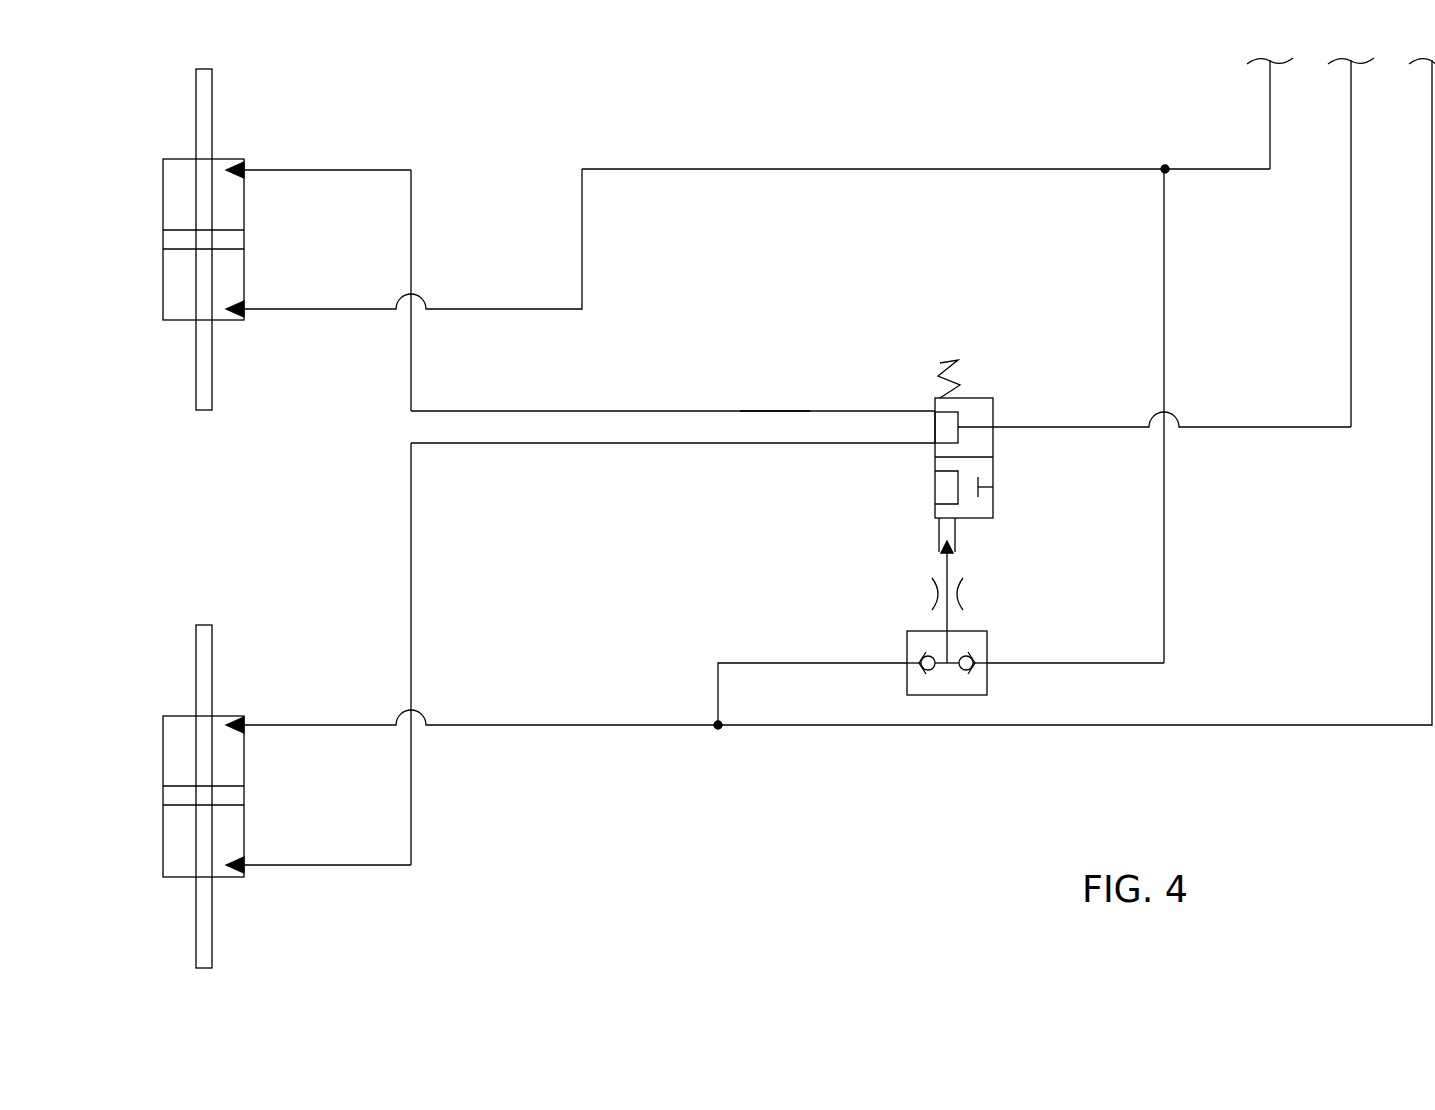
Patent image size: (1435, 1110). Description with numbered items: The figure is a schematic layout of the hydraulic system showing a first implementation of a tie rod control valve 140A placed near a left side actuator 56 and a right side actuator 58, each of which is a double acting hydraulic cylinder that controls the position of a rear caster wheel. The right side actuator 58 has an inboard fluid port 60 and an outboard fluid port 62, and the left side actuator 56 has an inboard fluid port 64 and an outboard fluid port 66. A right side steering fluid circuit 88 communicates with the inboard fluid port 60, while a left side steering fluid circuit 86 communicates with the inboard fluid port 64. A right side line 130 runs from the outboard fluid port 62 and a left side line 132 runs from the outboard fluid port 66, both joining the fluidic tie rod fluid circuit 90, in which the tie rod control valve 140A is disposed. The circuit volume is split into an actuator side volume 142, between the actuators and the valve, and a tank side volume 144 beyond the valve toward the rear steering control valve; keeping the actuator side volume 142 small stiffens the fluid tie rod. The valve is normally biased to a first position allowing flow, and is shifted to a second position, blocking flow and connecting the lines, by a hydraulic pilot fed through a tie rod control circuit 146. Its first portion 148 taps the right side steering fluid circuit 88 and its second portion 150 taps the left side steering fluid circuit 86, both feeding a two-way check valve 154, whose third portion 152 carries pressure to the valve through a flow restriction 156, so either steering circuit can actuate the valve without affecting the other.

The left side actuator 56 is at (163, 767).
The right side actuator 58 is at (163, 208).
The inboard fluid port 60 is at (240, 312).
The outboard fluid port 62 is at (230, 168).
The inboard fluid port 64 is at (230, 725).
The outboard fluid port 66 is at (240, 868).
The left side steering fluid circuit 86 is at (1303, 724).
The right side steering fluid circuit 88 is at (896, 169).
The fluidic tie rod fluid circuit 90 is at (1248, 427).
The right side line 130 is at (680, 411).
The left side line 132 is at (718, 443).
The tie rod control valve 140A is at (983, 398).
The actuator side volume 142 is at (775, 411).
The tank side volume 144 is at (1350, 313).
The tie rod control circuit 146 is at (1098, 663).
The first portion 148 is at (1165, 590).
The second portion 150 is at (718, 690).
The third portion 152 is at (948, 565).
The two-way check valve 154 is at (917, 631).
The flow restriction 156 is at (960, 605).